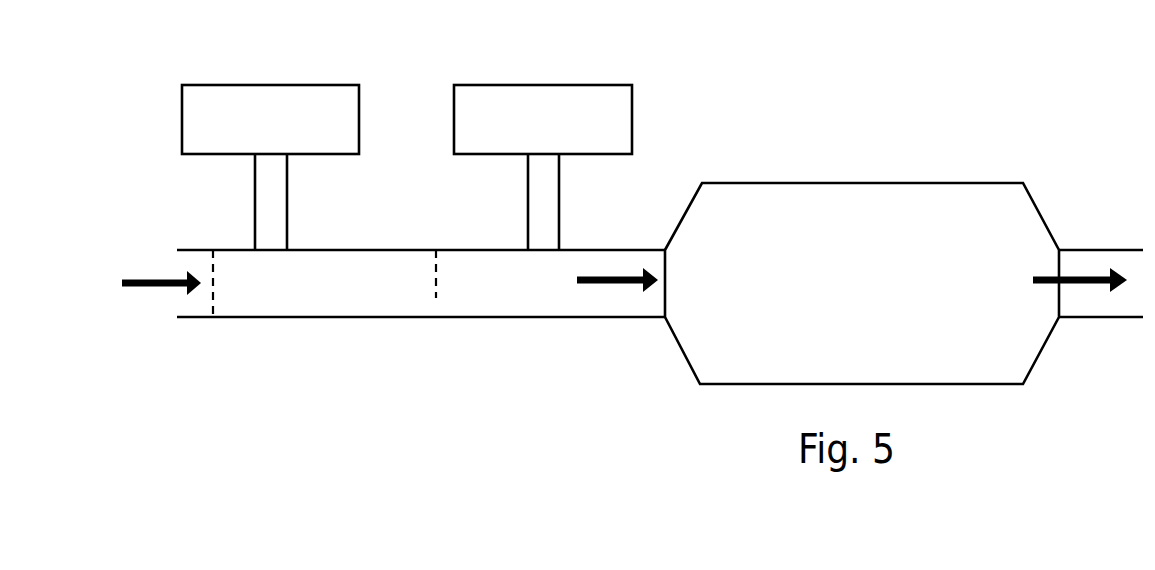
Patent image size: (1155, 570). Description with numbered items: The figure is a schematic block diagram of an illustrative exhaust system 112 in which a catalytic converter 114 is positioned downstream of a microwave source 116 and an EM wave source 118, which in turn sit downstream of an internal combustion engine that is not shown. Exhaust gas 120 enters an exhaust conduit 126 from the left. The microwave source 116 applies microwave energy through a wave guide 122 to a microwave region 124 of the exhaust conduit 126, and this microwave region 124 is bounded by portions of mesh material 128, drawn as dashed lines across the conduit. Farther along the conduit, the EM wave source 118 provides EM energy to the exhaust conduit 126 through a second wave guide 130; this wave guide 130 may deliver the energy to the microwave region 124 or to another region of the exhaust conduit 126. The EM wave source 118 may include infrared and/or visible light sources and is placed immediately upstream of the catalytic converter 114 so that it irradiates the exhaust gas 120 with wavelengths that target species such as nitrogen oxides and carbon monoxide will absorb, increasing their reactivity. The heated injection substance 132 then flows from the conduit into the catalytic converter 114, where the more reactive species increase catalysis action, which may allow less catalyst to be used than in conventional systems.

The exhaust system 112 is at (962, 17).
The catalytic converter 114 is at (963, 182).
The microwave source 116 is at (360, 118).
The EM wave source 118 is at (632, 117).
The exhaust gas 120 is at (183, 290).
The wave guide 122 is at (255, 198).
The microwave region 124 is at (338, 296).
The exhaust conduit 126 is at (572, 318).
The mesh material 128 is at (213, 298).
The wave guide 130 is at (527, 198).
The heated injection substance 132 is at (615, 283).